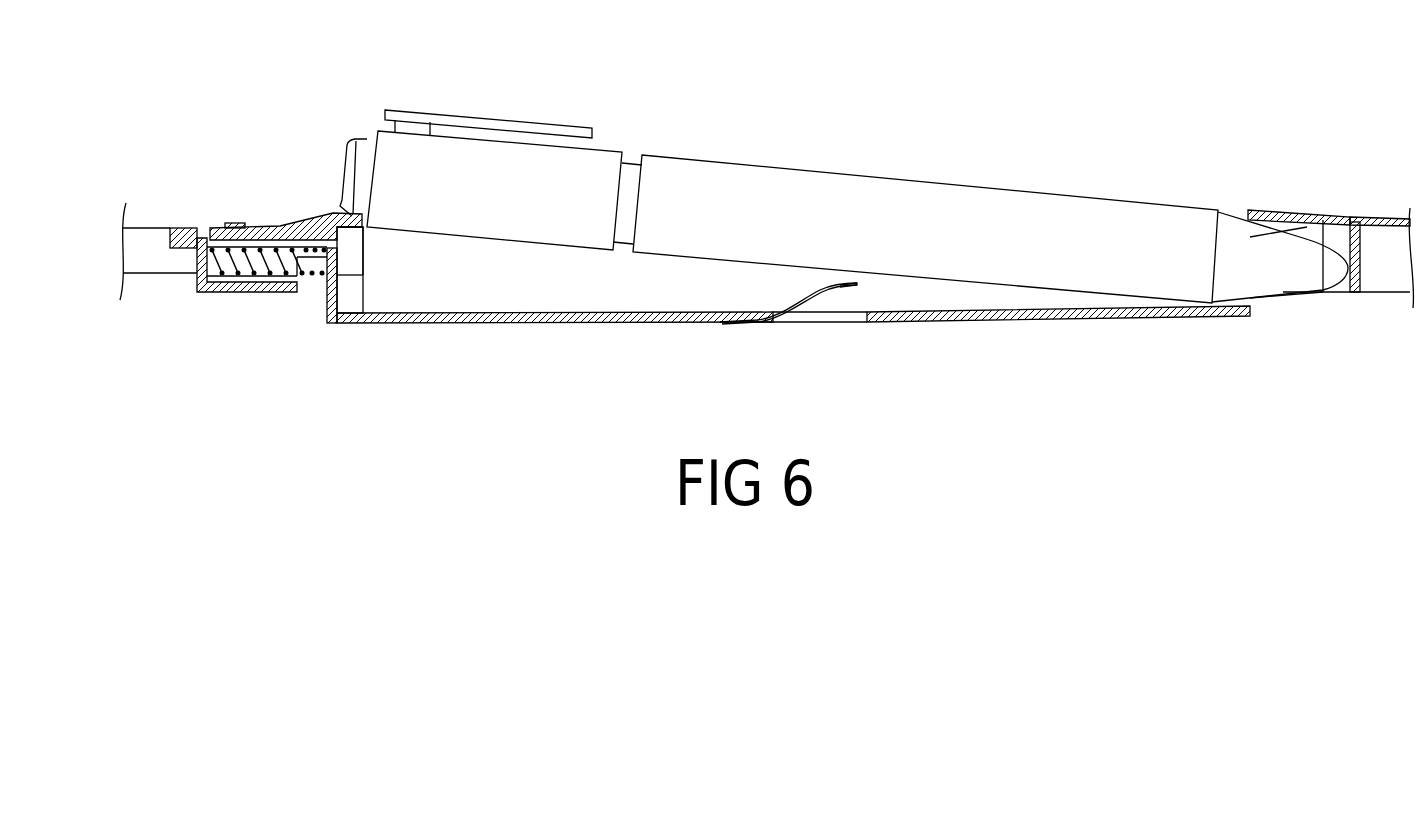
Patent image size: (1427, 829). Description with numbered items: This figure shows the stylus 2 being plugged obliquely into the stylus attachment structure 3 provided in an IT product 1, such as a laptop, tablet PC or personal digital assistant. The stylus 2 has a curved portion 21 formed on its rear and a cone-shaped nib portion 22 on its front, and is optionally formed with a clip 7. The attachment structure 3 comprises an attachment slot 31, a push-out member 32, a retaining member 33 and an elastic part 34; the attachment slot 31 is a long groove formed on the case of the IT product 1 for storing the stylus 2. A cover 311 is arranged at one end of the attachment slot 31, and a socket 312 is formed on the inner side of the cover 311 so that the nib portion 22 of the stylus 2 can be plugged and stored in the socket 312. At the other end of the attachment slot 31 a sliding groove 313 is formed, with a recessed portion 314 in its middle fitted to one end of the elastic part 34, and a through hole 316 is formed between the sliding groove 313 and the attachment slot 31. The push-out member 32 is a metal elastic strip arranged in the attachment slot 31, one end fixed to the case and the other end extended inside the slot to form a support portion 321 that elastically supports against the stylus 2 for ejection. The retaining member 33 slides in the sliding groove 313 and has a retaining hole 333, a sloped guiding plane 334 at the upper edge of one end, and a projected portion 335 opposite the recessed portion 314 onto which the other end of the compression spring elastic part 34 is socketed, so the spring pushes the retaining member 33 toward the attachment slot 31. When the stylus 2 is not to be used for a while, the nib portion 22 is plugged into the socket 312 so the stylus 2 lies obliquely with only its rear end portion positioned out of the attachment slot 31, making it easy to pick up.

The IT product 1 is at (146, 192).
The stylus 2 is at (833, 128).
The stylus attachment structure 3 is at (263, 165).
The pressing plate 7 is at (554, 124).
The curved portion 21 is at (350, 153).
The nib portion 22 is at (1270, 270).
The attachment slot 31 is at (482, 292).
The push-out member 32 is at (773, 314).
The retaining member 33 is at (252, 225).
The elastic part 34 is at (265, 290).
The cover 311 is at (1290, 210).
The socket 312 is at (1252, 236).
The sliding groove 313 is at (180, 236).
The recessed portion 314 is at (248, 283).
The through hole 316 is at (352, 235).
The support portion 321 is at (840, 287).
The retaining hole 333 is at (350, 300).
The guiding plane 334 is at (347, 212).
The projected portion 335 is at (308, 274).